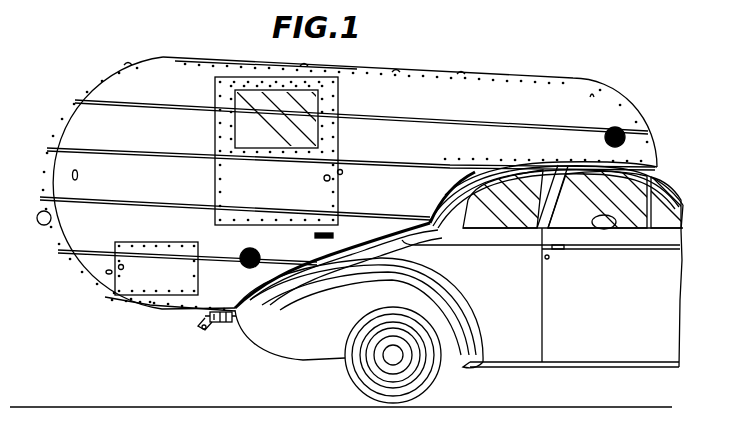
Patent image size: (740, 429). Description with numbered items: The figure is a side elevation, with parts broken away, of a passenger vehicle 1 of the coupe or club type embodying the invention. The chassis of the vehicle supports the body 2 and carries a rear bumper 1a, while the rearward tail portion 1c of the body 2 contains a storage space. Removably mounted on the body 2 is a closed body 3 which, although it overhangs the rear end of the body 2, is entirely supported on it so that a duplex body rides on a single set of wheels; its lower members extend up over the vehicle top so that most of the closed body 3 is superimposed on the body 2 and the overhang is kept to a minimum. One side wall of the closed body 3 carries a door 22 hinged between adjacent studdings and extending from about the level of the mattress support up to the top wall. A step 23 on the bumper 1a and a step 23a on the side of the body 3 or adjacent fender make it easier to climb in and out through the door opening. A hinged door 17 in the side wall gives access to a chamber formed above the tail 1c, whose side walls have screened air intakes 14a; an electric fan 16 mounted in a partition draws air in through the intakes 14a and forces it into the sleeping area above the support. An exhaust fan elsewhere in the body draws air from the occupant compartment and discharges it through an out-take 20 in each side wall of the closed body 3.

The passenger vehicle 1 is at (492, 392).
The rear bumper 1a is at (212, 323).
The tail portion 1c is at (378, 240).
The body 2 is at (605, 315).
The closed body 3 is at (45, 278).
The screened air intakes 14a is at (258, 251).
The electric fan 16 is at (553, 168).
The hinged door 17 is at (123, 284).
The out-take 20 is at (607, 130).
The door 22 is at (340, 141).
The step 23 is at (224, 311).
The step 23a is at (340, 235).